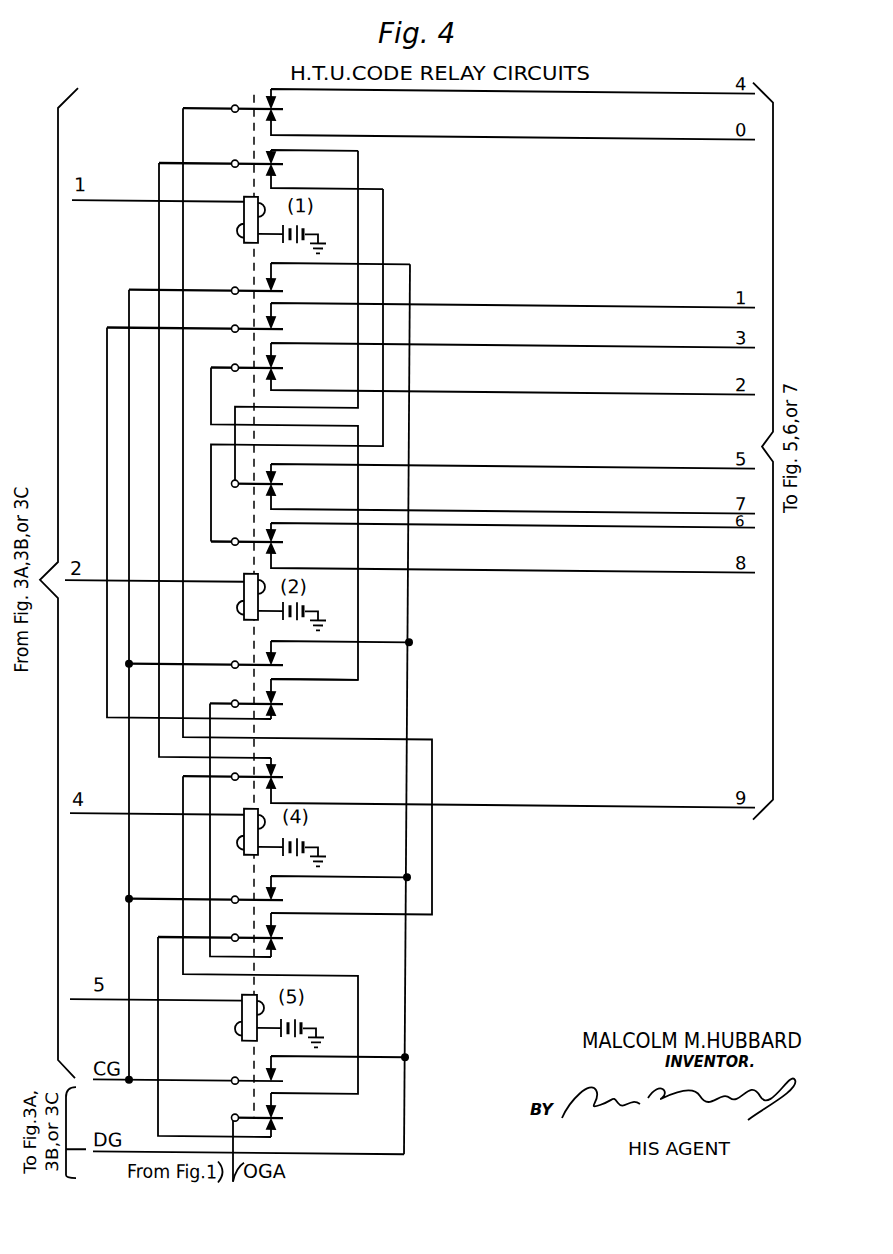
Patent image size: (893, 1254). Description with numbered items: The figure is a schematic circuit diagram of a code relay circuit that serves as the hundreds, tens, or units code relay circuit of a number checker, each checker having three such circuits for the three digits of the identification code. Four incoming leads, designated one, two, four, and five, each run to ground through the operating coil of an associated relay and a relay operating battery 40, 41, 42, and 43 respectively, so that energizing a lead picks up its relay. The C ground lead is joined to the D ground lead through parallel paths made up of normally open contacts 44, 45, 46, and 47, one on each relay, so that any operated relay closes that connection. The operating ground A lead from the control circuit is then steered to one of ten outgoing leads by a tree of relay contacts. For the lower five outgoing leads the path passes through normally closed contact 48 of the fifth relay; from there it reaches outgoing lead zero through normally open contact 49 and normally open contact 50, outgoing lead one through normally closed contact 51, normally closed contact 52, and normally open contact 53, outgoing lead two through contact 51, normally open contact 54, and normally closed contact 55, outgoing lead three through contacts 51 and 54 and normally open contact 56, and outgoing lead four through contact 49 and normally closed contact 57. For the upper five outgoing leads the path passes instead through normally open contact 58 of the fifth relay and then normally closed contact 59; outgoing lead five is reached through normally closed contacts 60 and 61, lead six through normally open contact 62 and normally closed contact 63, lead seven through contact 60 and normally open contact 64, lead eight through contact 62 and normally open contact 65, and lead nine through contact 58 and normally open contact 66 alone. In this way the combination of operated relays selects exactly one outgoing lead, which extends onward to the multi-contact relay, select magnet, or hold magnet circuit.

The relay operating battery 40 is at (299, 233).
The relay operating battery 41 is at (299, 610).
The relay operating battery 42 is at (299, 846).
The relay operating battery 43 is at (298, 1027).
The normally open contact 44 is at (273, 265).
The normally open contact 45 is at (273, 643).
The normally open contact 46 is at (273, 878).
The normally open contact 47 is at (273, 1058).
The normally closed contact 48 is at (276, 1133).
The normally open contact 49 is at (273, 915).
The normally open contact 50 is at (276, 124).
The normally closed contact 51 is at (276, 953).
The normally closed contact 52 is at (276, 719).
The normally open contact 53 is at (273, 305).
The normally open contact 54 is at (273, 681).
The normally closed contact 55 is at (276, 383).
The normally open contact 56 is at (273, 345).
The normally closed contact 57 is at (273, 91).
The normally open contact 58 is at (273, 1095).
The normally closed contact 59 is at (273, 760).
The normally closed contact 60 is at (273, 152).
The normally closed contact 61 is at (273, 466).
The normally open contact 62 is at (276, 179).
The normally closed contact 63 is at (273, 525).
The normally open contact 64 is at (276, 499).
The normally open contact 65 is at (276, 557).
The normally open contact 66 is at (276, 792).